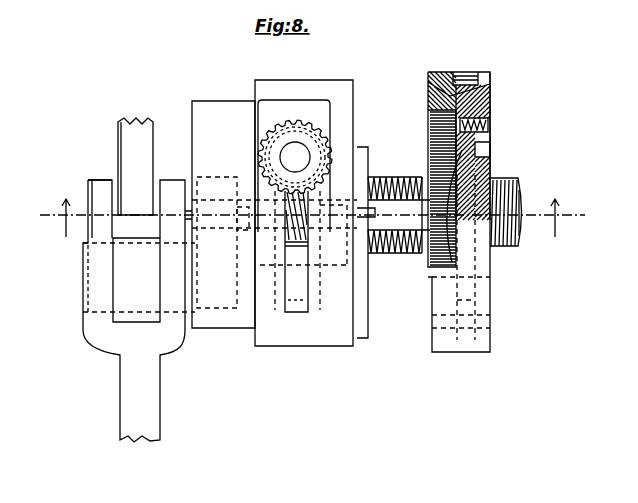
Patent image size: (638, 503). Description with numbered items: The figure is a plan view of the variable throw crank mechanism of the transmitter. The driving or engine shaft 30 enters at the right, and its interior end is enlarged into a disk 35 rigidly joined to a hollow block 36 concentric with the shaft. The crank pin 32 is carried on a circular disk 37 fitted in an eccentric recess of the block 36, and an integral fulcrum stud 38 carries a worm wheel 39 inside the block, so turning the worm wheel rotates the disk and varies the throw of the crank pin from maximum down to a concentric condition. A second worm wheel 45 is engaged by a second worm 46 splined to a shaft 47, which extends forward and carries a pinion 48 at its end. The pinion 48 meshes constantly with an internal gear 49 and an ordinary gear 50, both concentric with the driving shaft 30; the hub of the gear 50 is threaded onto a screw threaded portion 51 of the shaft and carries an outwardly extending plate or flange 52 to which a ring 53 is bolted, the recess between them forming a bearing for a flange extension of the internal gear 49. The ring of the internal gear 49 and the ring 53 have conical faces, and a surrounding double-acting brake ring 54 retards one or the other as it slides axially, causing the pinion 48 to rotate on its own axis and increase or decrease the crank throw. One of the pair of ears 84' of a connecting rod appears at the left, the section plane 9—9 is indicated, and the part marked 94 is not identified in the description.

The section plane 9— 9 is at (306, 218).
The driving shaft 30 is at (520, 194).
The crank pin 32 is at (83, 293).
The disk 35 is at (368, 308).
The hollow block 36 is at (118, 133).
The circular disk 37 is at (215, 177).
The fulcrum stud 38 is at (272, 268).
The worm wheel 39 is at (300, 312).
The second worm wheel 45 is at (309, 122).
The second worm 46 is at (286, 238).
The shaft 47 is at (384, 205).
The pinion 48 is at (458, 245).
The internal gear 49 is at (430, 103).
The gear 50 is at (433, 134).
The screw threaded portion 51 is at (406, 246).
The plate or flange 52 is at (490, 160).
The ring 53 is at (493, 103).
The double-acting brake ring 54 is at (490, 75).
The ears 84' is at (80, 200).
The clevis stem 94 is at (120, 390).